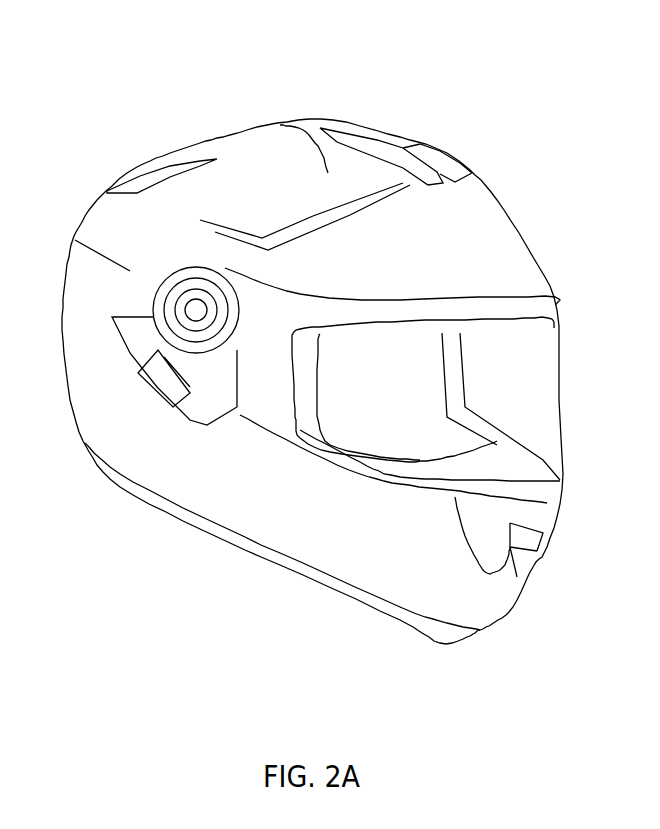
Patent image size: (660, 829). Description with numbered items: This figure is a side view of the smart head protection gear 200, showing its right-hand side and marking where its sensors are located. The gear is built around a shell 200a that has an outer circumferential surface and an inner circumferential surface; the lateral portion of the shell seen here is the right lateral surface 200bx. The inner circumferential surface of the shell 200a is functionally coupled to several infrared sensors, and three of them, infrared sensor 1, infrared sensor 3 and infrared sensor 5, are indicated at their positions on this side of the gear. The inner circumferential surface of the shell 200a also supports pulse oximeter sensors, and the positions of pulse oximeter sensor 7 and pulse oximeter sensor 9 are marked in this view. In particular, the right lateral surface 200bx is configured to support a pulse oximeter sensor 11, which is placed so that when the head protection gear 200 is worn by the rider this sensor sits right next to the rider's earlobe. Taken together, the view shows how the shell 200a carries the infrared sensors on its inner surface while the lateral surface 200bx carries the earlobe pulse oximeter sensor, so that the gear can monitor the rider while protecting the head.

The head protection gear 200 is at (503, 203).
The shell 200a is at (280, 125).
The right lateral surface 200bx is at (255, 390).
The infrared sensor 1 is at (392, 276).
The infrared sensor 3 is at (305, 200).
The infrared sensor 5 is at (175, 346).
The pulse oximeter sensor 7 is at (401, 196).
The pulse oximeter sensor 9 is at (182, 161).
The pulse oximeter sensor 11 is at (400, 447).